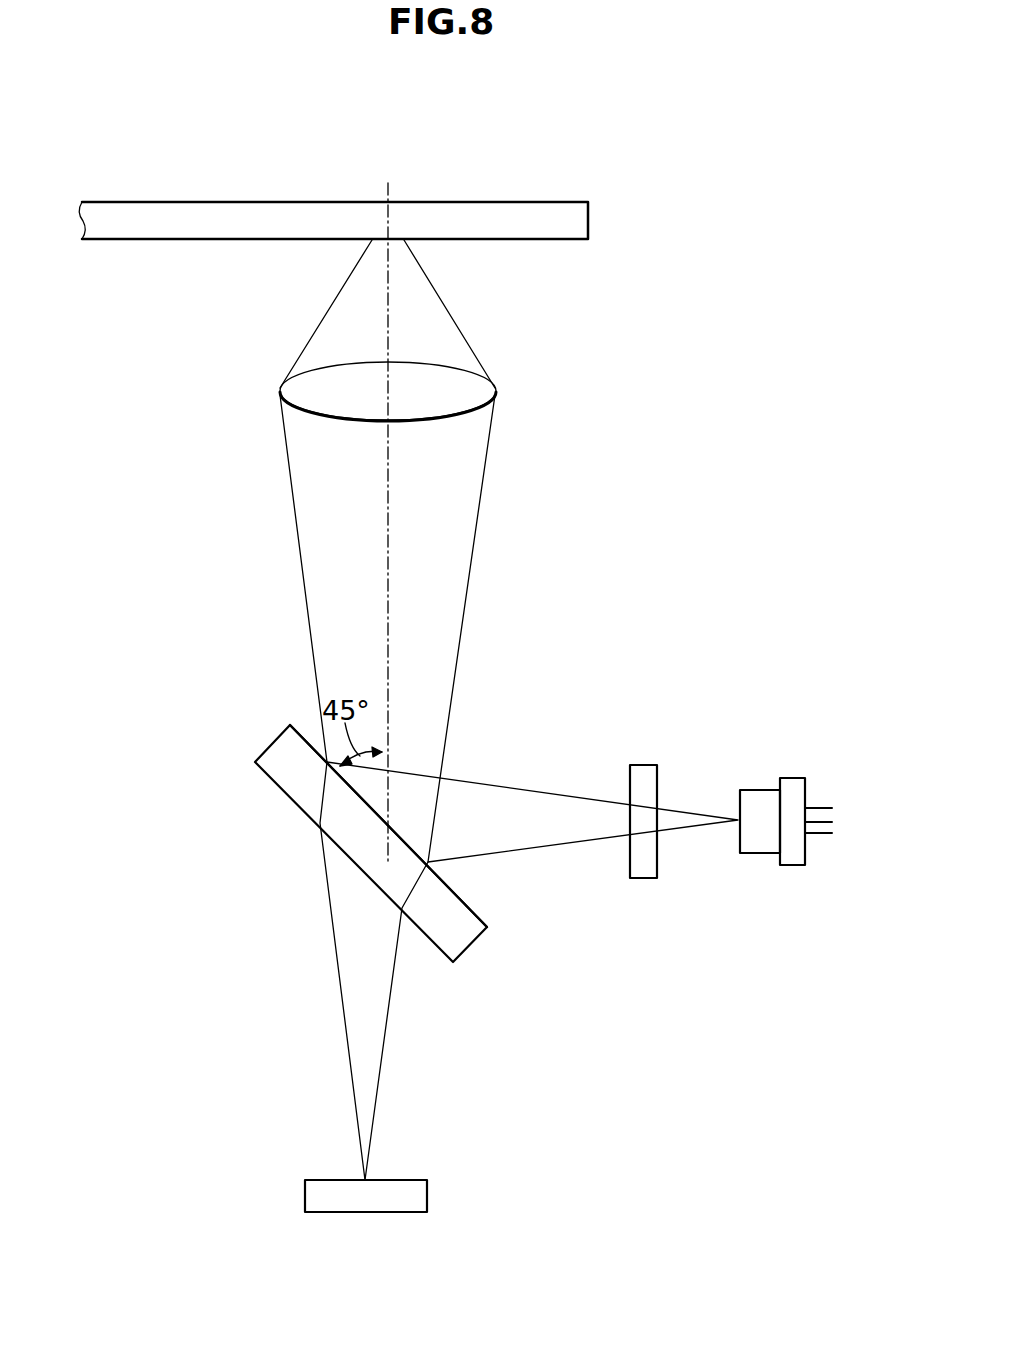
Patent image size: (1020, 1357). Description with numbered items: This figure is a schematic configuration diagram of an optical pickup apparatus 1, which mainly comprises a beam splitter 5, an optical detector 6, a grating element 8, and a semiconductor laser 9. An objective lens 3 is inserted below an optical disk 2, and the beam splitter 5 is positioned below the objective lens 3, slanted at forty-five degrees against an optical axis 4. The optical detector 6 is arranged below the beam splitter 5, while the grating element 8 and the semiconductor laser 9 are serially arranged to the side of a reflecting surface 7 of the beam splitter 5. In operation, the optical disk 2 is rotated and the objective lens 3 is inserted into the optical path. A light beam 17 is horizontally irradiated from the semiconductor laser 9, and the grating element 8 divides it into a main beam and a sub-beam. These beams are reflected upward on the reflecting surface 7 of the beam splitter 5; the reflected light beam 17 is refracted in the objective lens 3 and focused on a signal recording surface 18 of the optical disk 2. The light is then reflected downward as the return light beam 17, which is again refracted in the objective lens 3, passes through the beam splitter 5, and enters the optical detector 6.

The optical pickup apparatus 1 is at (618, 305).
The optical disk 2 is at (533, 213).
The objective lens 3 is at (487, 393).
The optical axis 4 is at (388, 316).
The beam splitter 5 is at (430, 940).
The optical detector 6 is at (367, 1212).
The reflecting surface 7 is at (477, 906).
The grating element 8 is at (643, 770).
The semiconductor laser 9 is at (795, 785).
The light beam 17 is at (303, 562).
The signal recording surface 18 is at (392, 242).